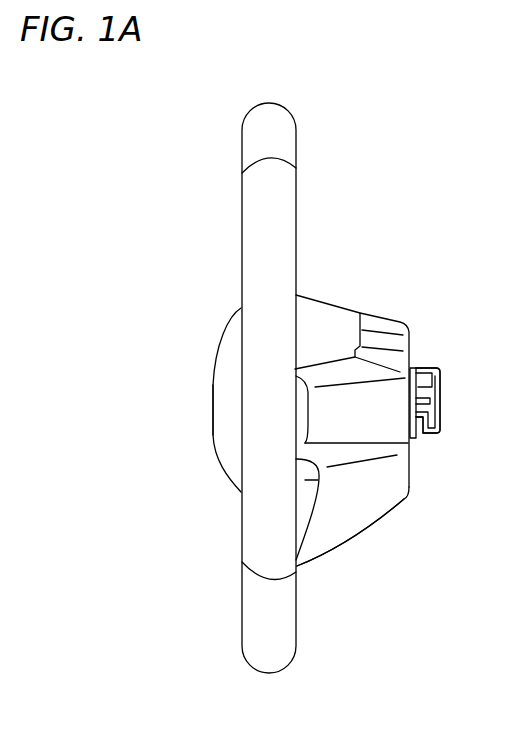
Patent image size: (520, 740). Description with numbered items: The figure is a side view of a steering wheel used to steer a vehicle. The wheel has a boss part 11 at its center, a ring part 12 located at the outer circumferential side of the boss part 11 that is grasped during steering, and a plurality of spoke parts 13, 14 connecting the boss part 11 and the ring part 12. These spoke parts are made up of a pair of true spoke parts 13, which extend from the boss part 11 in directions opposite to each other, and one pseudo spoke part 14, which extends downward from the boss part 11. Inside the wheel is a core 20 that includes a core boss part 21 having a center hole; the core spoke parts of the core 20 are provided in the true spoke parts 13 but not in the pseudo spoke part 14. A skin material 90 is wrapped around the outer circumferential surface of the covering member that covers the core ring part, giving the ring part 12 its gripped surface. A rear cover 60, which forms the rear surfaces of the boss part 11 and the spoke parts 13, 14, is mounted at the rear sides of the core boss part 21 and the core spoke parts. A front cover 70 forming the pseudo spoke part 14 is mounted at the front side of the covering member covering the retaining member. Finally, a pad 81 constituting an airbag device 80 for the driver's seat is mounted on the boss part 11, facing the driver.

The boss part 11 is at (381, 305).
The ring part 12 is at (232, 633).
The true spoke part 13 is at (343, 435).
The pseudo spoke part 14 is at (311, 565).
The core 20 is at (428, 400).
The core boss part 21 is at (420, 367).
The rear cover 60 is at (360, 523).
The front cover 70 is at (303, 498).
The airbag device 80 is at (216, 308).
The pad 81 is at (217, 372).
The skin material 90 is at (250, 455).